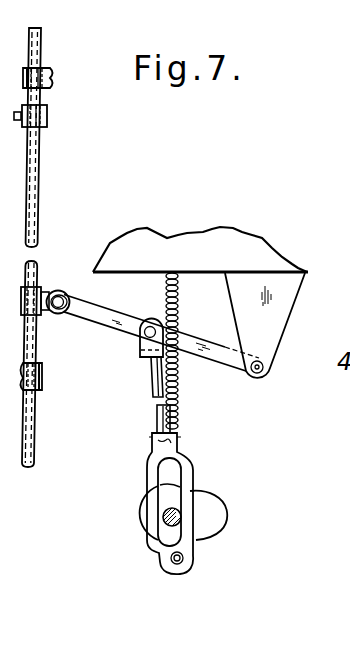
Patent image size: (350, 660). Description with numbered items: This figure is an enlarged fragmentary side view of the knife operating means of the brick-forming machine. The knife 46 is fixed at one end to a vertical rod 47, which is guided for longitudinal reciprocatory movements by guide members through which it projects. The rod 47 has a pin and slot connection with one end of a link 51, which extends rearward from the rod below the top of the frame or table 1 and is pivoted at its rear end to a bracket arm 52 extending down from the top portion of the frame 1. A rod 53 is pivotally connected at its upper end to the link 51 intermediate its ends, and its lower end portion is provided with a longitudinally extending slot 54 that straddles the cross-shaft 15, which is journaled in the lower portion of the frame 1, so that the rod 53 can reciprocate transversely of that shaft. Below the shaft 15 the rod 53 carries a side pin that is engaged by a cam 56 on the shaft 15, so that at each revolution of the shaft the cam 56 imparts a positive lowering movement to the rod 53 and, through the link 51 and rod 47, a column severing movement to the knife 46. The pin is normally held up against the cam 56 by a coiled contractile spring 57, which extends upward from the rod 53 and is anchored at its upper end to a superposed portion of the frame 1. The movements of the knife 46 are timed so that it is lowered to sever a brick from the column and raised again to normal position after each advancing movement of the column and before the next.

The frame or table 1 is at (222, 240).
The cross-shaft 15 is at (160, 519).
The knife 46 is at (38, 195).
The vertical rod 47 is at (38, 150).
The link 51 is at (108, 315).
The bracket arm 52 is at (275, 334).
The rod 53 is at (153, 389).
The longitudinally extending slot 54 is at (170, 477).
The cam 56 is at (208, 507).
The coiled contractile spring 57 is at (178, 319).